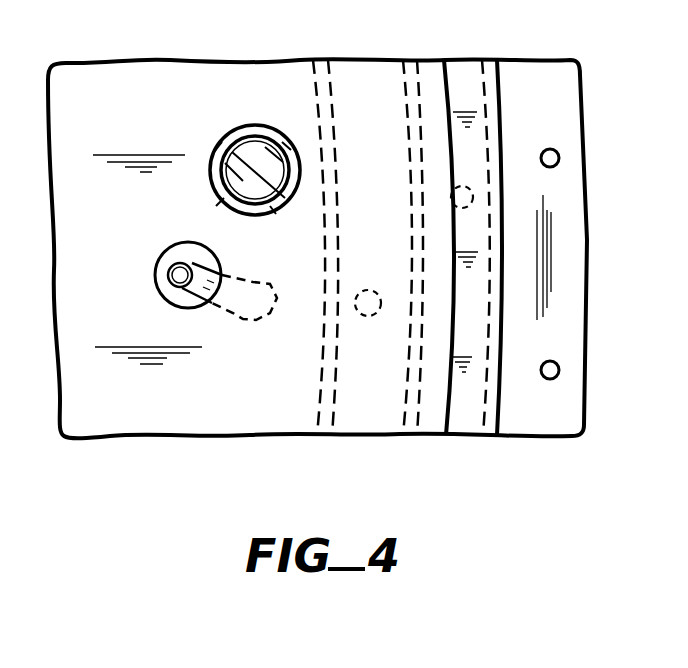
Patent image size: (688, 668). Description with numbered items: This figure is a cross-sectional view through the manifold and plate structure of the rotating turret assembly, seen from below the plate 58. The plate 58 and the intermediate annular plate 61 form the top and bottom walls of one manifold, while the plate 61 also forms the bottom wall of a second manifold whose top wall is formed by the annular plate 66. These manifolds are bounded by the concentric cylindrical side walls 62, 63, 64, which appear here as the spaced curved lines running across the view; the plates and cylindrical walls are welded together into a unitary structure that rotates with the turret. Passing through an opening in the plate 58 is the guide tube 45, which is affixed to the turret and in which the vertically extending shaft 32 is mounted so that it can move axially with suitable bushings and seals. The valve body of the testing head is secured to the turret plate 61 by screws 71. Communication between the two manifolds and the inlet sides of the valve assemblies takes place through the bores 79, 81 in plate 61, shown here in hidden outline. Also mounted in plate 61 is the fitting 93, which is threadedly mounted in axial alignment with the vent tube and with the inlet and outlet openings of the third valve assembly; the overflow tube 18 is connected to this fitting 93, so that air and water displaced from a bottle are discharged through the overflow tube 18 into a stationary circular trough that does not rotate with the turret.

The overflow tube 18 is at (182, 292).
The shaft 32 is at (223, 157).
The guide tube 45 is at (240, 128).
The plate 58 is at (82, 265).
The intermediate annular plate 61 is at (530, 393).
The cylindrical side wall 62 is at (317, 92).
The cylindrical side wall 63 is at (408, 387).
The cylindrical side wall 64 is at (485, 395).
The annular plate 66 is at (465, 78).
The screws 71 is at (550, 150).
The bore 79 is at (358, 313).
The bore 81 is at (452, 188).
The fitting 93 is at (240, 322).